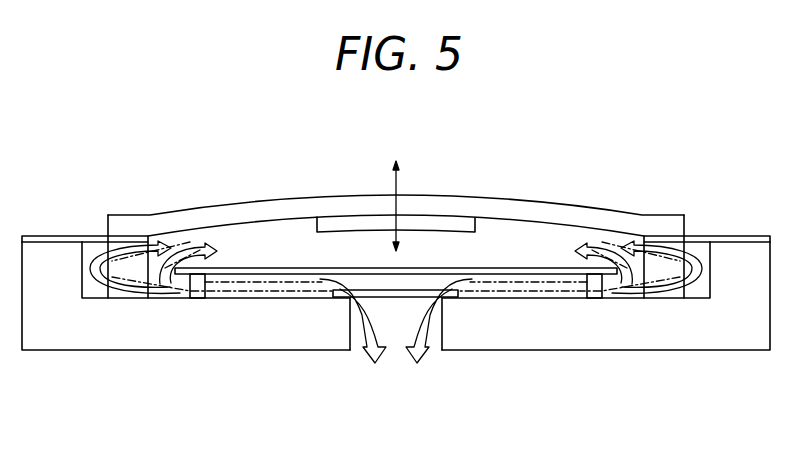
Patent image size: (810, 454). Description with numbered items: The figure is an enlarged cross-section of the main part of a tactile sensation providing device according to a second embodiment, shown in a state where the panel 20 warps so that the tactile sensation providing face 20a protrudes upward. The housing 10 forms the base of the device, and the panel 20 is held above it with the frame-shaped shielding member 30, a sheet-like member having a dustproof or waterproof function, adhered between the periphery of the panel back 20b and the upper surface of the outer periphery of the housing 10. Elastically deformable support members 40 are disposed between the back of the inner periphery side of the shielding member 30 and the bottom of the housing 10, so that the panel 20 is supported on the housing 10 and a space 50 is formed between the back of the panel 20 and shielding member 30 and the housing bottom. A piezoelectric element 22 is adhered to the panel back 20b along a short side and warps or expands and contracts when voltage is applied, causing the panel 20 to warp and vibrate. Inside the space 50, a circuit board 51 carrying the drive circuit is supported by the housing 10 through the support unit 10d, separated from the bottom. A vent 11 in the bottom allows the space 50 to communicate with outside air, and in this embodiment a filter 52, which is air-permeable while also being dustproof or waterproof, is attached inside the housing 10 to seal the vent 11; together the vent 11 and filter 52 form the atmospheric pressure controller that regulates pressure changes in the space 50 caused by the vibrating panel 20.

The housing 10 is at (396, 338).
The support unit 10d is at (197, 293).
The vent 11 is at (355, 340).
The panel 20 is at (396, 224).
The tactile sensation providing face 20a is at (227, 203).
The panel back 20b is at (180, 232).
The piezoelectric element 22 is at (437, 223).
The shielding member 30 is at (65, 235).
The support member 40 is at (128, 292).
The space 50 is at (276, 237).
The circuit board 51 is at (498, 267).
The filter 52 is at (398, 298).